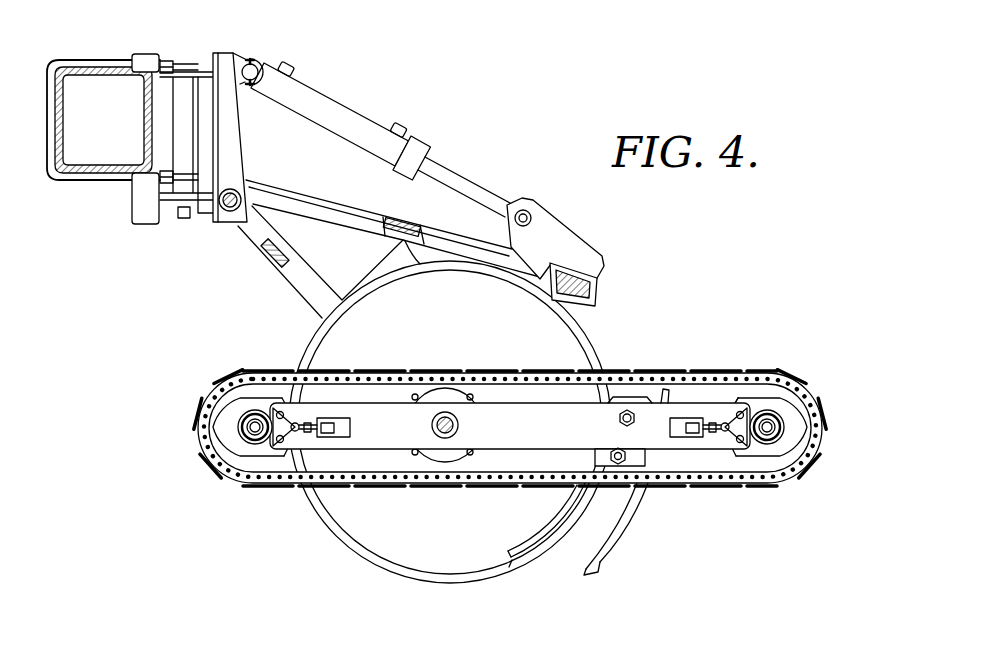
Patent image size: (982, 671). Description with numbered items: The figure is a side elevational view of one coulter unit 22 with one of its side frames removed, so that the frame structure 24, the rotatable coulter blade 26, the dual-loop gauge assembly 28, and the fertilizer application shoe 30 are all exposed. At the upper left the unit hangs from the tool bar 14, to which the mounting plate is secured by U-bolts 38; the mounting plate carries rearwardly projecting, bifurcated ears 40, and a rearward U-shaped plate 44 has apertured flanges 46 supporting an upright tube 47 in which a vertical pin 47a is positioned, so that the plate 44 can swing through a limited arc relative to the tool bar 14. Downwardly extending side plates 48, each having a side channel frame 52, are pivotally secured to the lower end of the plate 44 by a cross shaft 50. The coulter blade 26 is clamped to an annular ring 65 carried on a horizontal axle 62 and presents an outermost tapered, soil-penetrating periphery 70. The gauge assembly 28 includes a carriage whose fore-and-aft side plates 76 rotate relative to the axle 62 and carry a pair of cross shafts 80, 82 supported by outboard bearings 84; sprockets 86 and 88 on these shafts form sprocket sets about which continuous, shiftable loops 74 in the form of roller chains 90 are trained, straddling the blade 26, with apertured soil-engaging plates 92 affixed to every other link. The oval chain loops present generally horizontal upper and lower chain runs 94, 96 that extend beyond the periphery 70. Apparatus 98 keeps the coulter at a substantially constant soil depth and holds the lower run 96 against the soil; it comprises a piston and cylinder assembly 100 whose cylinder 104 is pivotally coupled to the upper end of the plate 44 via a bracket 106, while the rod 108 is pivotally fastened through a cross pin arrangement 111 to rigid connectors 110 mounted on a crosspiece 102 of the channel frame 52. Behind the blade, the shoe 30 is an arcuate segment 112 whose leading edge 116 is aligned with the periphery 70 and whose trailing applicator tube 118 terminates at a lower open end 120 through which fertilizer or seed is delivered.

The tool bar 14 is at (83, 168).
The coulter unit 22 is at (334, 147).
The frame structure 24 is at (658, 248).
The coulter blade 26 is at (359, 565).
The gauge assembly 28 is at (510, 413).
The fertilizer application shoe 30 is at (594, 553).
The U-bolts 38 is at (83, 64).
The ears 40 is at (196, 74).
The U-shaped plate 44 is at (234, 173).
The apertured flanges 46 is at (204, 88).
The upright tube 47 is at (190, 145).
The vertical pin 47a is at (186, 212).
The side plates 48 is at (432, 220).
The cross shaft 50 is at (232, 207).
The side channel frame 52 is at (310, 277).
The axle 62 is at (458, 425).
The annular ring 65 is at (445, 391).
The periphery 70 is at (445, 583).
The loops 74 is at (723, 491).
The side plates 76 is at (540, 418).
The cross shaft 80 is at (238, 420).
The cross shaft 82 is at (784, 416).
The outboard bearings 84 is at (763, 417).
The sprocket 86 is at (222, 435).
The sprocket 88 is at (778, 455).
The roller chains 90 is at (815, 438).
The soil-engaging plates 92 is at (736, 393).
The upper chain run 94 is at (327, 363).
The lower chain run 96 is at (337, 490).
The apparatus 98 is at (437, 219).
The piston and cylinder assembly 100 is at (376, 112).
The crosspiece 102 is at (588, 267).
The cylinder 104 is at (361, 118).
The bracket 106 is at (252, 63).
The rod 108 is at (441, 169).
The rigid connectors 110 is at (567, 240).
The cross pin arrangement 111 is at (541, 220).
The arcuate segment 112 is at (563, 557).
The leading edge 116 is at (558, 542).
The applicator tube 118 is at (627, 503).
The lower open end 120 is at (580, 568).